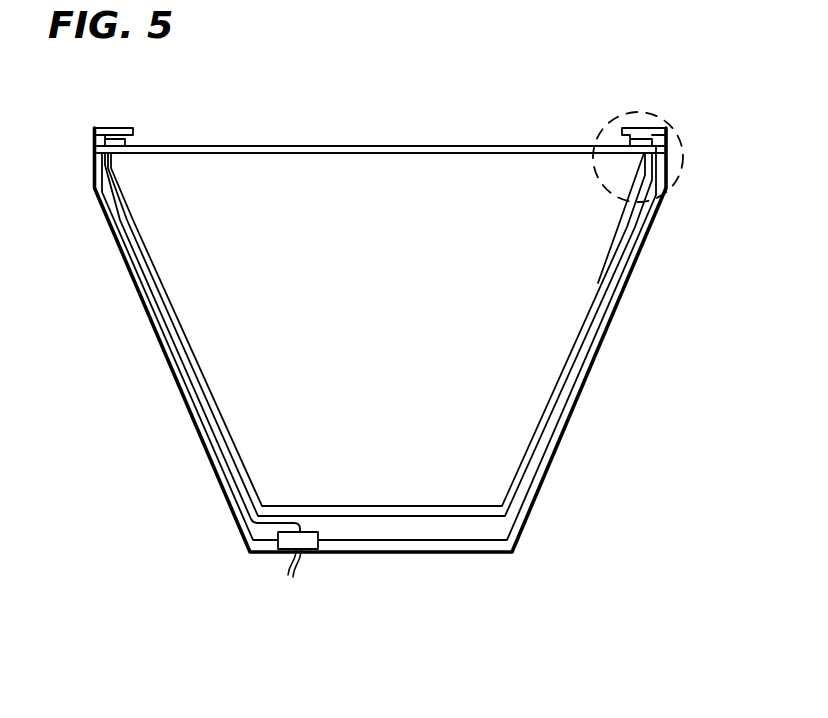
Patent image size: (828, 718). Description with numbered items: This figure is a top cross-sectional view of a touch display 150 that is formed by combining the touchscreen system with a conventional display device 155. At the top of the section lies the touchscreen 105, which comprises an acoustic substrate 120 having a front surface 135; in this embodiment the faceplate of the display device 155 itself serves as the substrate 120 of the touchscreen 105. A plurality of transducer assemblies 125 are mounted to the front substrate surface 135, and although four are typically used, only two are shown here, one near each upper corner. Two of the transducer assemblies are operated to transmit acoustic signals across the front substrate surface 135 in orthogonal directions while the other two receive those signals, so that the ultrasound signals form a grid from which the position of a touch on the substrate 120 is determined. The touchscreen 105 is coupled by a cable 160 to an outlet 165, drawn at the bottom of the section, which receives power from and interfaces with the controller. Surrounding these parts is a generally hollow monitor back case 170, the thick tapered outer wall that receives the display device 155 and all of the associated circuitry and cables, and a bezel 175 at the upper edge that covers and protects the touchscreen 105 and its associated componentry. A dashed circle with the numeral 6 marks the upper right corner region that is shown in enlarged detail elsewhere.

The touch display 150 is at (402, 116).
The monitor back case 170 is at (564, 420).
The bezel 175 is at (116, 127).
The transducer assembly 125 is at (627, 142).
The acoustic substrate 120 is at (468, 145).
The touchscreen 105 is at (229, 139).
The front surface 135 is at (312, 145).
The cable 160 is at (182, 356).
The display device 155 is at (604, 283).
The outlet 165 is at (313, 550).
The detail region shown in FIG. 6 is at (687, 193).